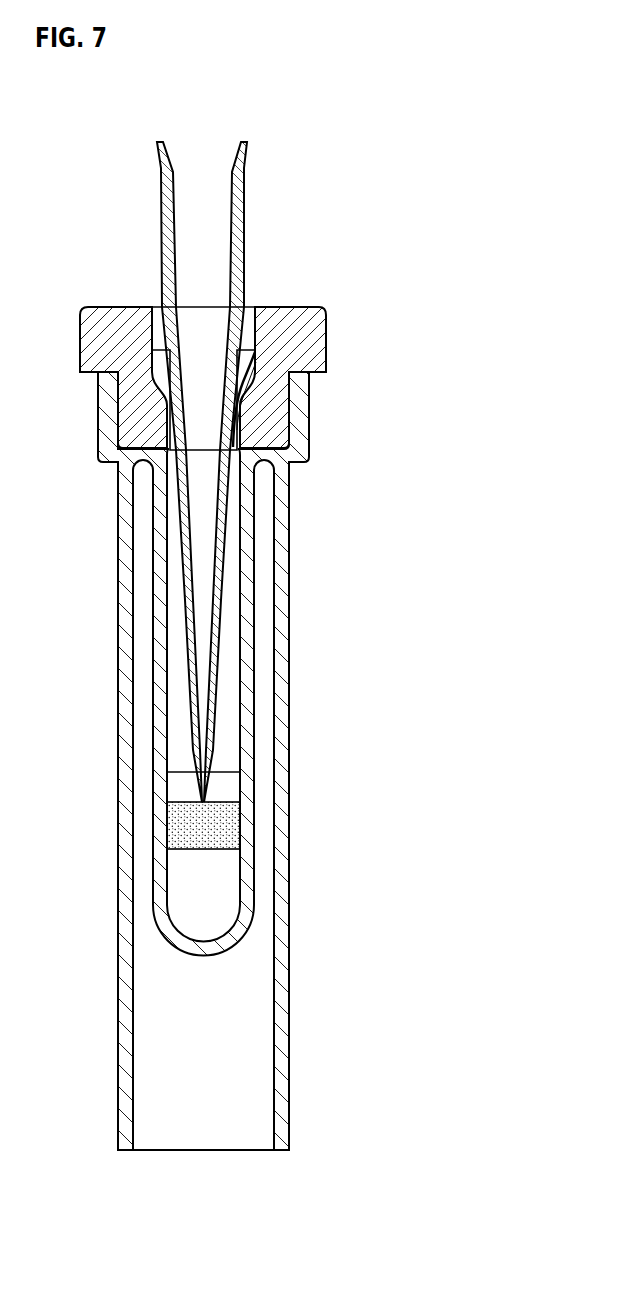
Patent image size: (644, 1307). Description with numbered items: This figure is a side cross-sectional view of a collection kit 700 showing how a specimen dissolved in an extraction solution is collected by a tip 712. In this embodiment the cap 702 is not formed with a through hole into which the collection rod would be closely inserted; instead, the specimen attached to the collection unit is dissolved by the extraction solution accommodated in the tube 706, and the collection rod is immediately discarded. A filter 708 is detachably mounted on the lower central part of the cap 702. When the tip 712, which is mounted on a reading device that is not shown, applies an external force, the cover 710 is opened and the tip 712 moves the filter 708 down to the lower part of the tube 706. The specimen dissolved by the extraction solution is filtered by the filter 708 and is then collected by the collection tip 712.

The collection kit 700 is at (375, 205).
The cap 702 is at (297, 307).
The tube 706 is at (289, 589).
The filter 708 is at (167, 820).
The cover 710 is at (243, 382).
The tip 712 is at (241, 217).